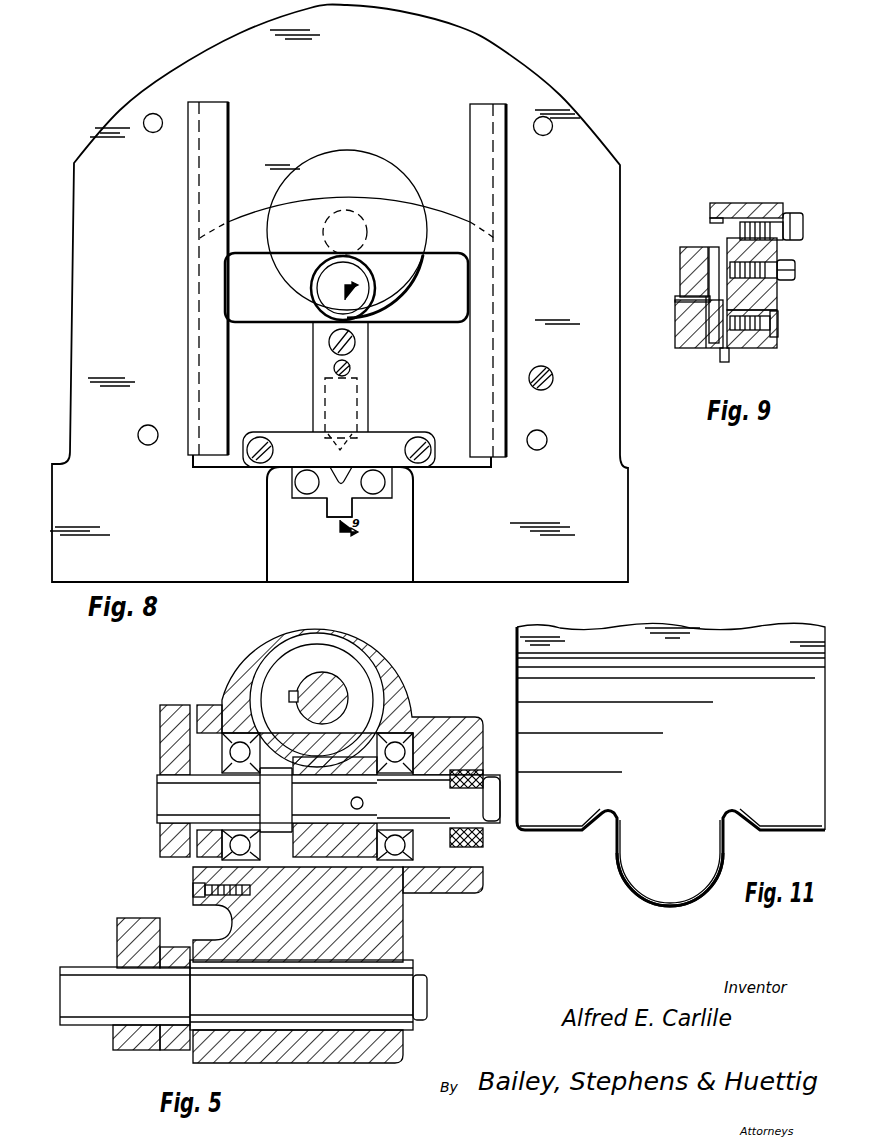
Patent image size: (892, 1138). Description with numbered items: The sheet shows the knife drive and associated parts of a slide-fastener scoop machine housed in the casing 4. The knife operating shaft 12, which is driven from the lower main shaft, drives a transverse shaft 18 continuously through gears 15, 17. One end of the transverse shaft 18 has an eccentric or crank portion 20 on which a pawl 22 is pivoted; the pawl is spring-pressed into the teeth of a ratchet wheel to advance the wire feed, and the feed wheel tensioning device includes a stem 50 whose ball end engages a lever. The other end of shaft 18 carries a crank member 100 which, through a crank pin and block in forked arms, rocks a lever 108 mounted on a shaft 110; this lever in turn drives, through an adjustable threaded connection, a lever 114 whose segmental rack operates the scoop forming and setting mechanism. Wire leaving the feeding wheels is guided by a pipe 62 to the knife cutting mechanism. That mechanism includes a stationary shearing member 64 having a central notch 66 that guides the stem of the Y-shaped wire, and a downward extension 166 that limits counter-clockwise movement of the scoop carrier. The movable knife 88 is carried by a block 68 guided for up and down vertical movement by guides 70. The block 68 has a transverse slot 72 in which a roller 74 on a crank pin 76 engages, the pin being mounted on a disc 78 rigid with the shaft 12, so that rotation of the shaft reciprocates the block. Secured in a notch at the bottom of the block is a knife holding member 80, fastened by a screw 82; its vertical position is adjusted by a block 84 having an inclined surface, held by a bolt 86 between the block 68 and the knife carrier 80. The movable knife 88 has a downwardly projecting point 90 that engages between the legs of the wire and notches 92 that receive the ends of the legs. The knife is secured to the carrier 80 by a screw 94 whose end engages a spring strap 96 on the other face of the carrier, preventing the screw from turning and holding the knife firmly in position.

In FIG. 8, the casing 4 is at (583, 173).
In FIG. 9, the casing 4 is at (690, 279).
In FIG. 8, the knife operating shaft 12 is at (352, 228).
In FIG. 5, the knife operating shaft 12 is at (332, 690).
In FIG. 5, the gear 15 is at (368, 703).
In FIG. 5, the gear 17 is at (318, 843).
In FIG. 5, the transverse shaft 18 is at (348, 817).
In FIG. 5, the eccentric or crank portion 20 is at (478, 815).
In FIG. 5, the pawl 22 is at (472, 775).
In FIG. 8, the stem 50 is at (552, 372).
In FIG. 9, the pipe 62 is at (676, 322).
In FIG. 9, the stationary shearing member 64 is at (712, 345).
In FIG. 8, the central notch 66 is at (356, 444).
In FIG. 9, the central notch 66 is at (716, 260).
In FIG. 8, the block 68 is at (432, 226).
In FIG. 9, the block 68 is at (735, 210).
In FIG. 8, the guides 70 is at (485, 305).
In FIG. 8, the transverse slot 72 is at (428, 318).
In FIG. 8, the roller 74 is at (366, 306).
In FIG. 8, the crank pin 76 is at (332, 287).
In FIG. 8, the disc 78 is at (412, 272).
In FIG. 8, the knife holding member 80 is at (365, 364).
In FIG. 9, the knife holding member 80 is at (781, 296).
In FIG. 8, the screw 82 is at (330, 343).
In FIG. 9, the screw 82 is at (777, 218).
In FIG. 8, the block 84 is at (334, 369).
In FIG. 9, the block 84 is at (774, 262).
In FIG. 9, the bolt 86 is at (795, 275).
In FIG. 9, the movable knife 88 is at (745, 348).
In FIG. 11, the movable knife 88 is at (677, 685).
In FIG. 8, the downwardly projecting point 90 is at (338, 486).
In FIG. 9, the downwardly projecting point 90 is at (728, 368).
In FIG. 11, the downwardly projecting point 90 is at (680, 893).
In FIG. 11, the notches 92 is at (730, 820).
In FIG. 9, the screw 94 is at (775, 324).
In FIG. 8, the spring strap 96 is at (418, 432).
In FIG. 9, the spring strap 96 is at (779, 336).
In FIG. 5, the crank member 100 is at (178, 720).
In FIG. 5, the lever 108 is at (118, 942).
In FIG. 5, the shaft 110 is at (378, 992).
In FIG. 5, the lever 114 is at (170, 1047).
In FIG. 8, the downward extension 166 is at (338, 512).